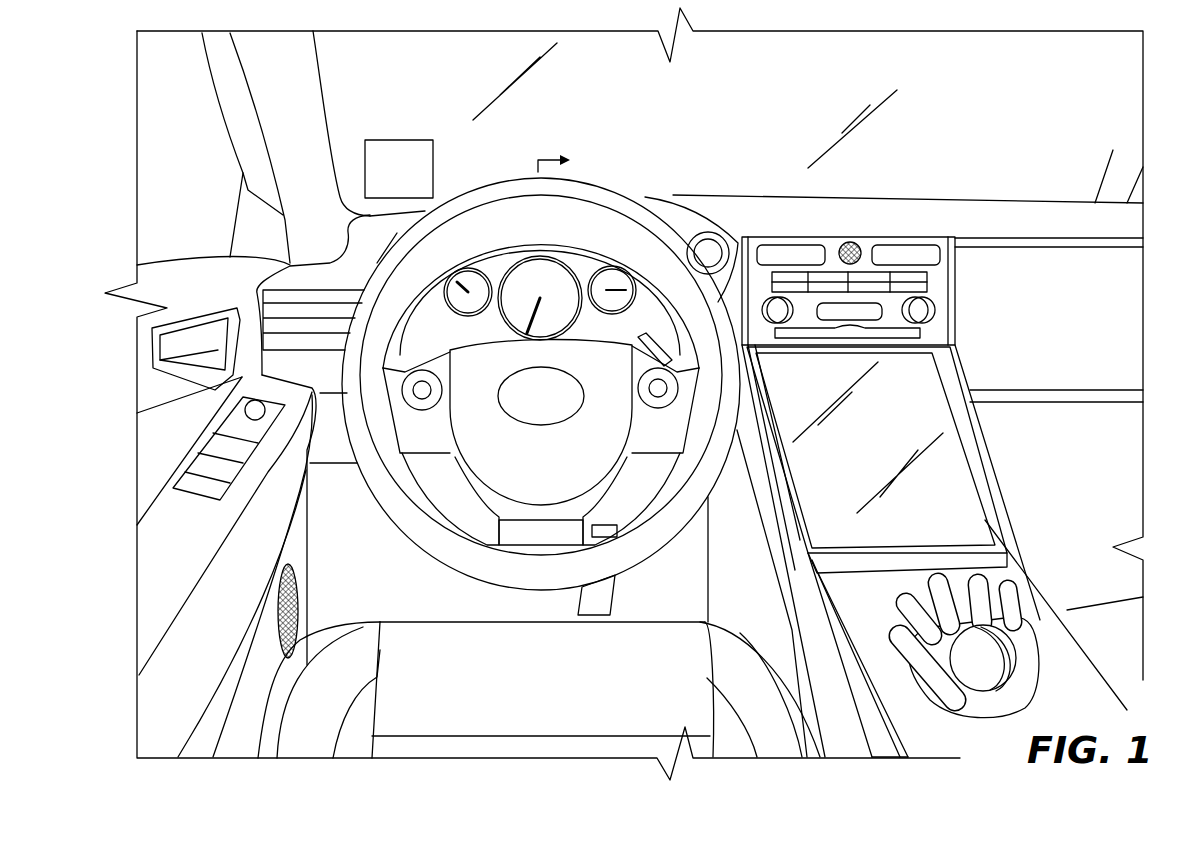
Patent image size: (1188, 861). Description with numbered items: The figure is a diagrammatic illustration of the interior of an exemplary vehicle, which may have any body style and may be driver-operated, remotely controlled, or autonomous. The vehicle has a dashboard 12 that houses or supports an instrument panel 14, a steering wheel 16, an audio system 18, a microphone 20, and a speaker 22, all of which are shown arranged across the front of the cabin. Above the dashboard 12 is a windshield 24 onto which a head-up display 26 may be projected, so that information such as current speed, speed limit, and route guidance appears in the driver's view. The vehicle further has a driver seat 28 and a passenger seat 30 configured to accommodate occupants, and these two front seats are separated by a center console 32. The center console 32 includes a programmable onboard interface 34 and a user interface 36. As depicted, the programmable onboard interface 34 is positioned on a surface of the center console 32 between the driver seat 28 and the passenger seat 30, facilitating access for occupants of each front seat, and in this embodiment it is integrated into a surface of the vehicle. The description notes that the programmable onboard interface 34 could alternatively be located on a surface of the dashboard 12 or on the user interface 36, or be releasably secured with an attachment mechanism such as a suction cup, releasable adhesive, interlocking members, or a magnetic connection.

The dashboard 12 is at (766, 224).
The instrument panel 14 is at (426, 334).
The steering wheel 16 is at (380, 528).
The audio system 18 is at (948, 310).
The microphone 20 is at (851, 241).
The speaker 22 is at (277, 612).
The windshield 24 is at (691, 122).
The head-up display (HUD) 26 is at (447, 107).
The driver seat 28 is at (413, 655).
The passenger seat 30 is at (1108, 646).
The center console 32 is at (923, 732).
The programmable onboard interface (POI) 34 is at (1050, 650).
The user interface 36 is at (866, 446).